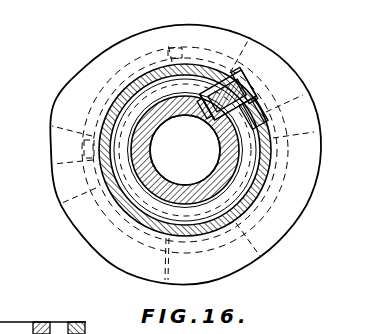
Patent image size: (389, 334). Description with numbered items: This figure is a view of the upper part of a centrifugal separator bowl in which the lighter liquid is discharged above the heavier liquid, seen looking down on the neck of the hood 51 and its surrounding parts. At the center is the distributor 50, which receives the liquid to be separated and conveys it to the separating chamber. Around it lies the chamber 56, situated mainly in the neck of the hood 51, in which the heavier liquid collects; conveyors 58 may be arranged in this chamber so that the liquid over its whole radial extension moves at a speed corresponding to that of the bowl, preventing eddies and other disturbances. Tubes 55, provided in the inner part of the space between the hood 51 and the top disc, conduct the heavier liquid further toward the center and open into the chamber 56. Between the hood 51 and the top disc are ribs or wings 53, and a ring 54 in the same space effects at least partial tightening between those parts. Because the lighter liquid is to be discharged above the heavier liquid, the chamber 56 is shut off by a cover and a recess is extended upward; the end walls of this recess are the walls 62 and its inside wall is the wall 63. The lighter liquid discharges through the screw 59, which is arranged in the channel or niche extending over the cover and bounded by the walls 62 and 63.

The distributor 50 is at (208, 173).
The hood 51 is at (137, 62).
The ribs or wings 53 is at (56, 114).
The ring 54 is at (62, 203).
The tubes 55 is at (172, 53).
The chamber 56 is at (118, 92).
The conveyors 58 is at (150, 132).
The screw 59 is at (244, 75).
The end walls of the recess 62 is at (214, 80).
The inside wall 63 is at (216, 132).